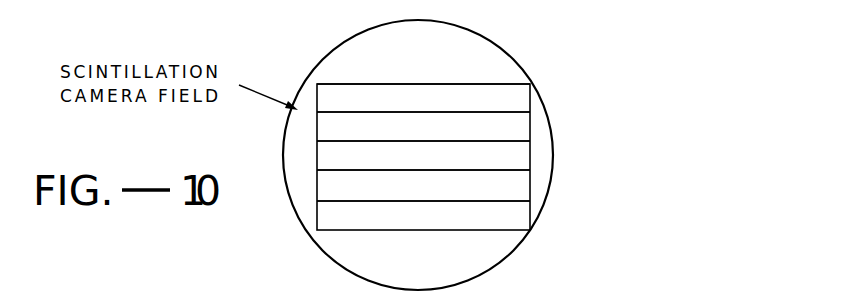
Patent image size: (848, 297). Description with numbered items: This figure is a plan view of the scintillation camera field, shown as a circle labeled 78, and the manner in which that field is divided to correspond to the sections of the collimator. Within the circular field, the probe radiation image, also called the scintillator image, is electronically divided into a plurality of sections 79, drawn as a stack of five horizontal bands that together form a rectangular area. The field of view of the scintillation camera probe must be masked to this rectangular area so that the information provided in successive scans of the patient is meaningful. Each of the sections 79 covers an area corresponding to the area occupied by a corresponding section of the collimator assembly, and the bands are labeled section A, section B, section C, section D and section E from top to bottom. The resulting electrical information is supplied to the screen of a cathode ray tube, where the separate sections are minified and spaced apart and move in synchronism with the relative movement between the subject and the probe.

The scintillation camera field 78 is at (518, 63).
The sections 79 is at (328, 213).
The section A is at (533, 100).
The section B is at (533, 128).
The section C is at (533, 156).
The section D is at (533, 186).
The section E is at (533, 216).